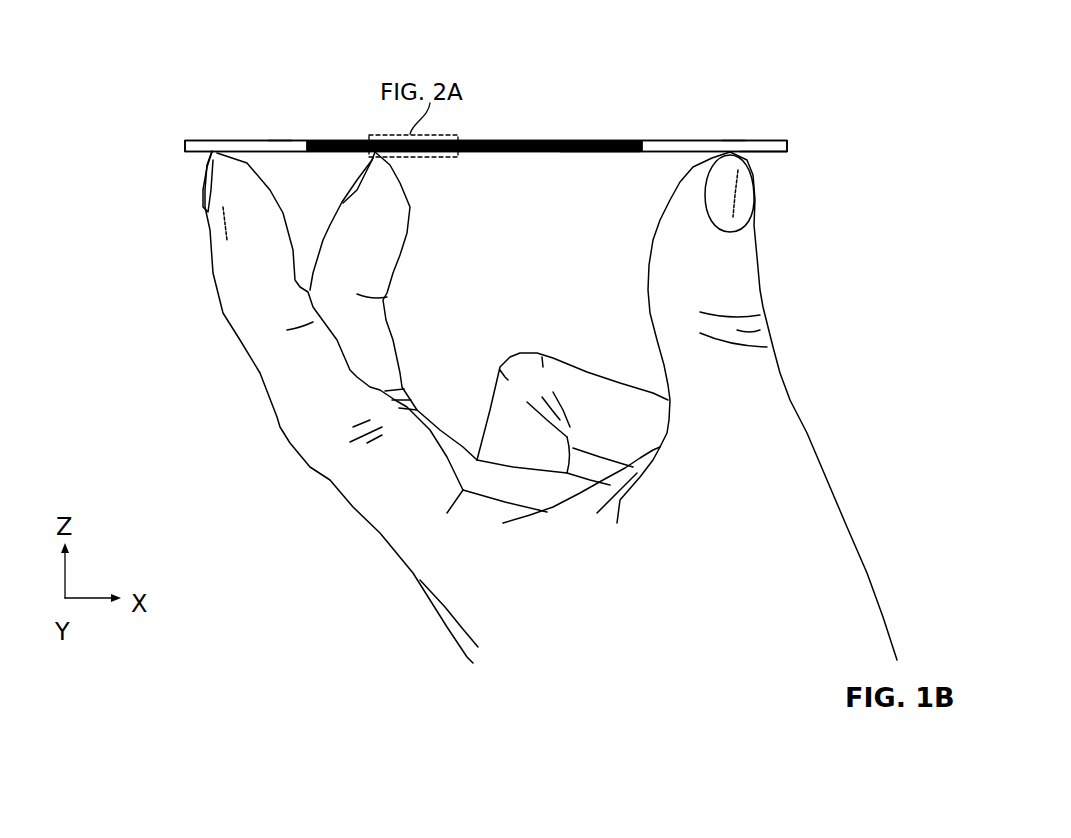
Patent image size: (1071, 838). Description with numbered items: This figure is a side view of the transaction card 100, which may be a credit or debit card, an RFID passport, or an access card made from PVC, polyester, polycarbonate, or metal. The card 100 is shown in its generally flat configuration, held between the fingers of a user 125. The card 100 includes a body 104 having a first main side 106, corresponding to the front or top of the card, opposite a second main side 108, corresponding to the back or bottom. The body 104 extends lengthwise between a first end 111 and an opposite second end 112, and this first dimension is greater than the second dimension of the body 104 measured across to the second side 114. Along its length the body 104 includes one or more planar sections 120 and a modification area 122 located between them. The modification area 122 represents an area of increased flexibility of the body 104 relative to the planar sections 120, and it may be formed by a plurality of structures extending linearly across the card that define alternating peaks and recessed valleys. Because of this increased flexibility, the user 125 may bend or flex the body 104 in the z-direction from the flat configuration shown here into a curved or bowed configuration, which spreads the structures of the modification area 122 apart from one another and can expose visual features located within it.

The transaction card 100 is at (230, 38).
The body 104 is at (672, 134).
The first main side 106 is at (225, 140).
The second main side 108 is at (600, 153).
The first end 111 is at (176, 146).
The second end 112 is at (797, 146).
The second side 114 is at (780, 153).
The planar sections 120 is at (280, 134).
The modification area 122 is at (563, 134).
The user 125 is at (767, 366).